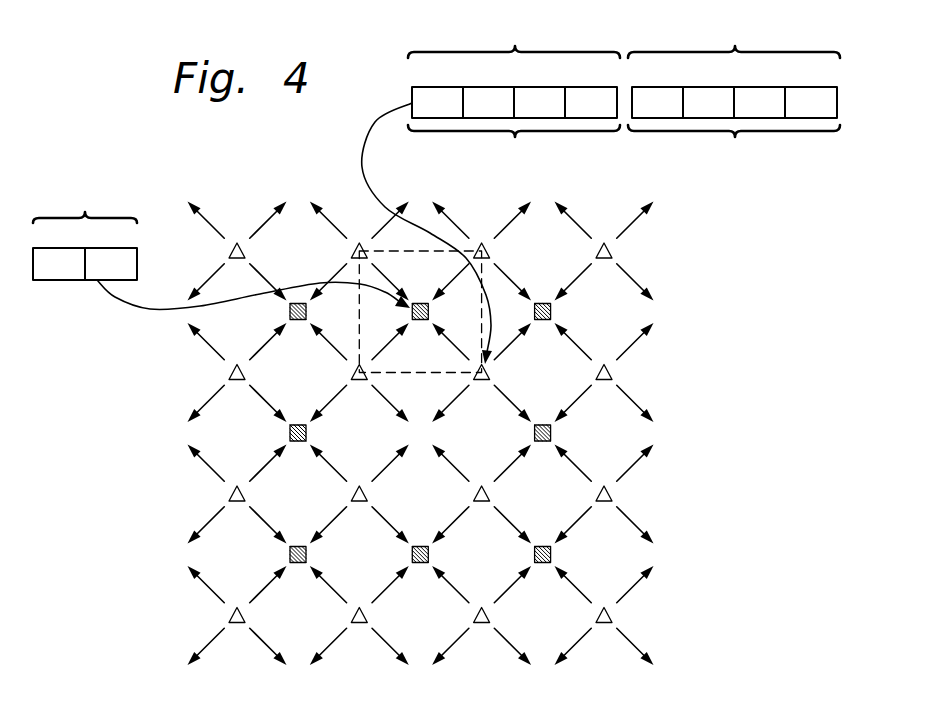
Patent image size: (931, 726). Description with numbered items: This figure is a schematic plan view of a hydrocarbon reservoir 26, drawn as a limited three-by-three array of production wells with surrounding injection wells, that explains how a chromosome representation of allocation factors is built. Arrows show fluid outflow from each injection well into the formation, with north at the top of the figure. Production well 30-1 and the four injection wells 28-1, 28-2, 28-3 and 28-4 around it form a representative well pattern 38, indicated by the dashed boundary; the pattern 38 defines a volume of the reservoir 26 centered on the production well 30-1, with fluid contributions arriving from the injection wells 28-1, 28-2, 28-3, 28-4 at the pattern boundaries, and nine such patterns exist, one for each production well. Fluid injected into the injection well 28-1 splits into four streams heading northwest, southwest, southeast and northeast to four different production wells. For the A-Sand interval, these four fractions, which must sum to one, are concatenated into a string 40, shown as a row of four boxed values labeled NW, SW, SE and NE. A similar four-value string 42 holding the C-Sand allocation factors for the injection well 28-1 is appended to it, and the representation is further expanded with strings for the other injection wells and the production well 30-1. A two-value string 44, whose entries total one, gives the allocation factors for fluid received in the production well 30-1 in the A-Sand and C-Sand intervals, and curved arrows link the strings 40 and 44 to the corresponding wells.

The hydrocarbon reservoir 26 is at (80, 121).
The injection well 28-1 is at (482, 381).
The injection well 28-2 is at (491, 250).
The injection well 28-3 is at (351, 251).
The injection well 28-4 is at (359, 381).
The production well 30-1 is at (420, 321).
The well pattern 38 is at (358, 336).
The string 40 is at (491, 194).
The string 42 is at (734, 96).
The two-value string 44 is at (221, 248).